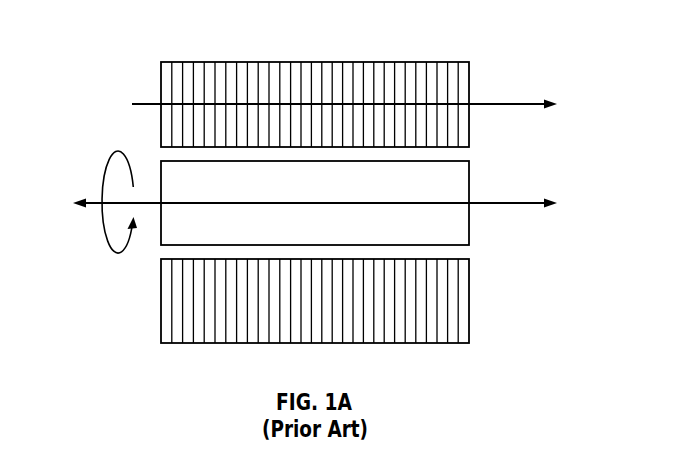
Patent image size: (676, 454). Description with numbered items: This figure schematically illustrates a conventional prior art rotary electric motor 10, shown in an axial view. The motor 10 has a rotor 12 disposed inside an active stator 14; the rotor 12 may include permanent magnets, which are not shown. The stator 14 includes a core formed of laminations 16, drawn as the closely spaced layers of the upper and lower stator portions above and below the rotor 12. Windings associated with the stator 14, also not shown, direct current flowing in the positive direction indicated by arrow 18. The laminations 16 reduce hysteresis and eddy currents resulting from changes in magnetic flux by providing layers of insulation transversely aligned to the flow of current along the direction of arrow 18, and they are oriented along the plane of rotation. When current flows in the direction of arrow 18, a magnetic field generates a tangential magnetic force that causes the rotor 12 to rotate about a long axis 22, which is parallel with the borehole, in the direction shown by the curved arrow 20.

The rotary electric motor 10 is at (515, 41).
The rotor 12 is at (445, 218).
The active stator 14 is at (458, 344).
The laminations 16 is at (187, 307).
The arrow 18 is at (513, 101).
The arrow 20 is at (102, 183).
The long axis 22 is at (513, 200).